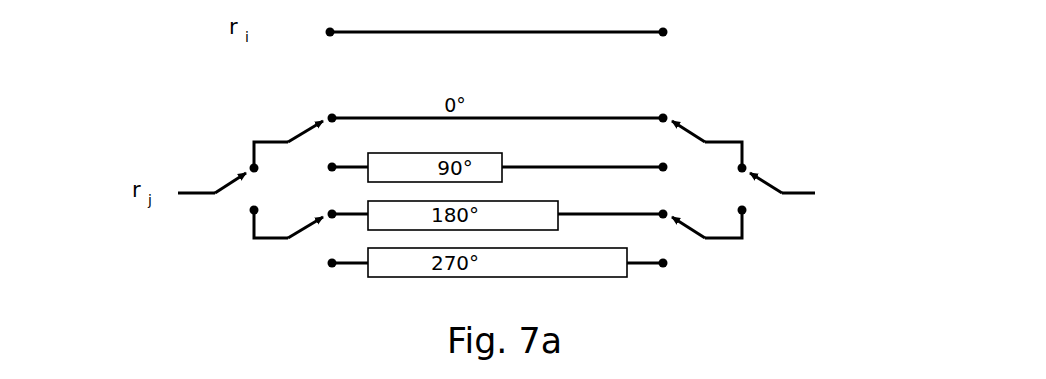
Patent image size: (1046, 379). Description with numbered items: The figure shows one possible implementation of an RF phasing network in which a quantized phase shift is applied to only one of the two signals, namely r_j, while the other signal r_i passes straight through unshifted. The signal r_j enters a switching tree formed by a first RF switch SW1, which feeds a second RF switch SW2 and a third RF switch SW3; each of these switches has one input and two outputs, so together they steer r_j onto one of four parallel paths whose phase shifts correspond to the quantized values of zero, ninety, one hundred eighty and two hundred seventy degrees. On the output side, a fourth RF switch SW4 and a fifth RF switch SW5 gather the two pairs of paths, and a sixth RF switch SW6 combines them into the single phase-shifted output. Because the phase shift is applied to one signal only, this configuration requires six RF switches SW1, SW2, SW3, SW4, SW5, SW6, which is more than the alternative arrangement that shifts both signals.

The RF switch SW1 is at (235, 205).
The RF switch SW2 is at (312, 156).
The RF switch SW3 is at (312, 253).
The RF switch SW4 is at (687, 156).
The RF switch SW5 is at (683, 253).
The RF switch SW6 is at (760, 206).